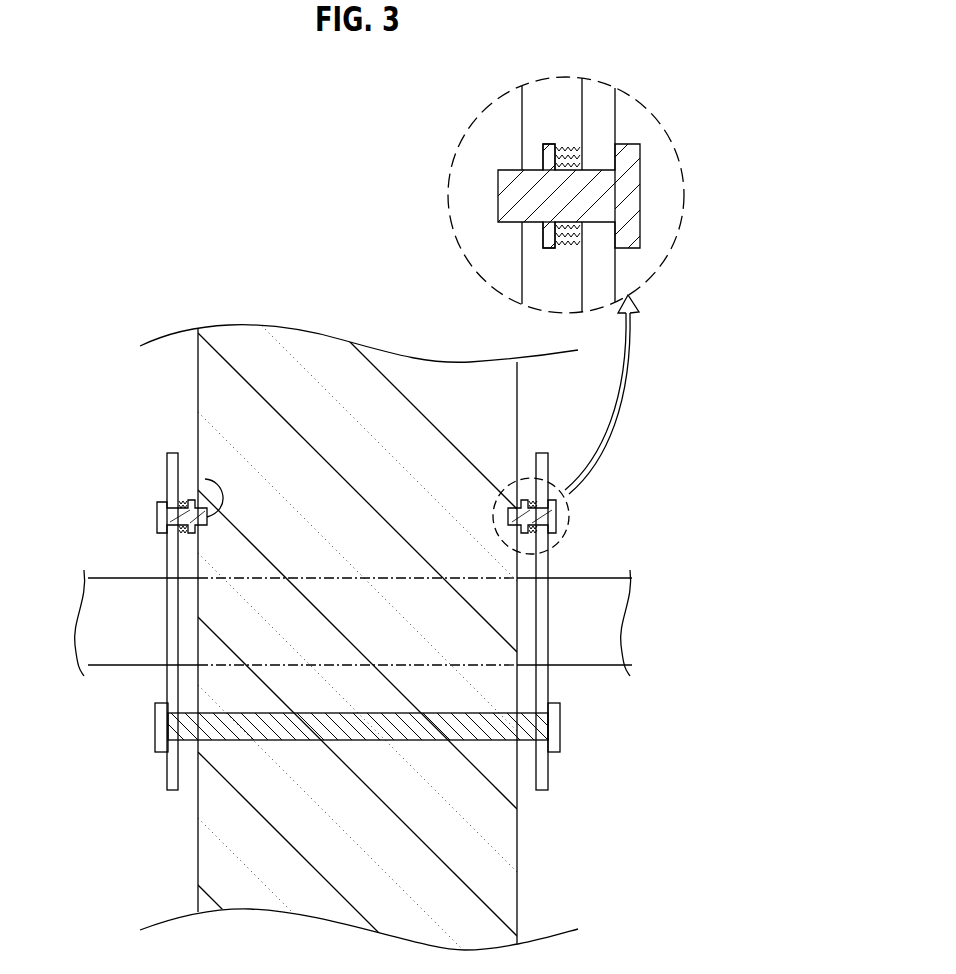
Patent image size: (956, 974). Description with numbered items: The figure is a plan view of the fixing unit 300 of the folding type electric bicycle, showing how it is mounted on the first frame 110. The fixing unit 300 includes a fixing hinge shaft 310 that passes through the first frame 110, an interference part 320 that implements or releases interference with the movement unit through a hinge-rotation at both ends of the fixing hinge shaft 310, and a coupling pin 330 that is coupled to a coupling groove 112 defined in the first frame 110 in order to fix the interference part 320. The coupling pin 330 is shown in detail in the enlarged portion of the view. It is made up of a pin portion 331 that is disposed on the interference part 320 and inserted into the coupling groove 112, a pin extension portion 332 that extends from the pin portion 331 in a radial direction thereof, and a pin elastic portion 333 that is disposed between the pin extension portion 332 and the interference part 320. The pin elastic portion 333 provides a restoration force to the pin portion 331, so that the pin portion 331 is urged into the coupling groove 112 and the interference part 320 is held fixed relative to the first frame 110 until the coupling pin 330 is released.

The first frame 110 is at (287, 435).
The coupling groove 112 is at (205, 479).
The fixing unit 300 is at (399, 434).
The fixing hinge shaft 310 is at (520, 720).
The interference part 320 is at (540, 690).
The coupling pin 330 is at (570, 516).
The pin portion 331 is at (627, 163).
The pin extension portion 332 is at (545, 152).
The pin elastic portion 333 is at (567, 142).